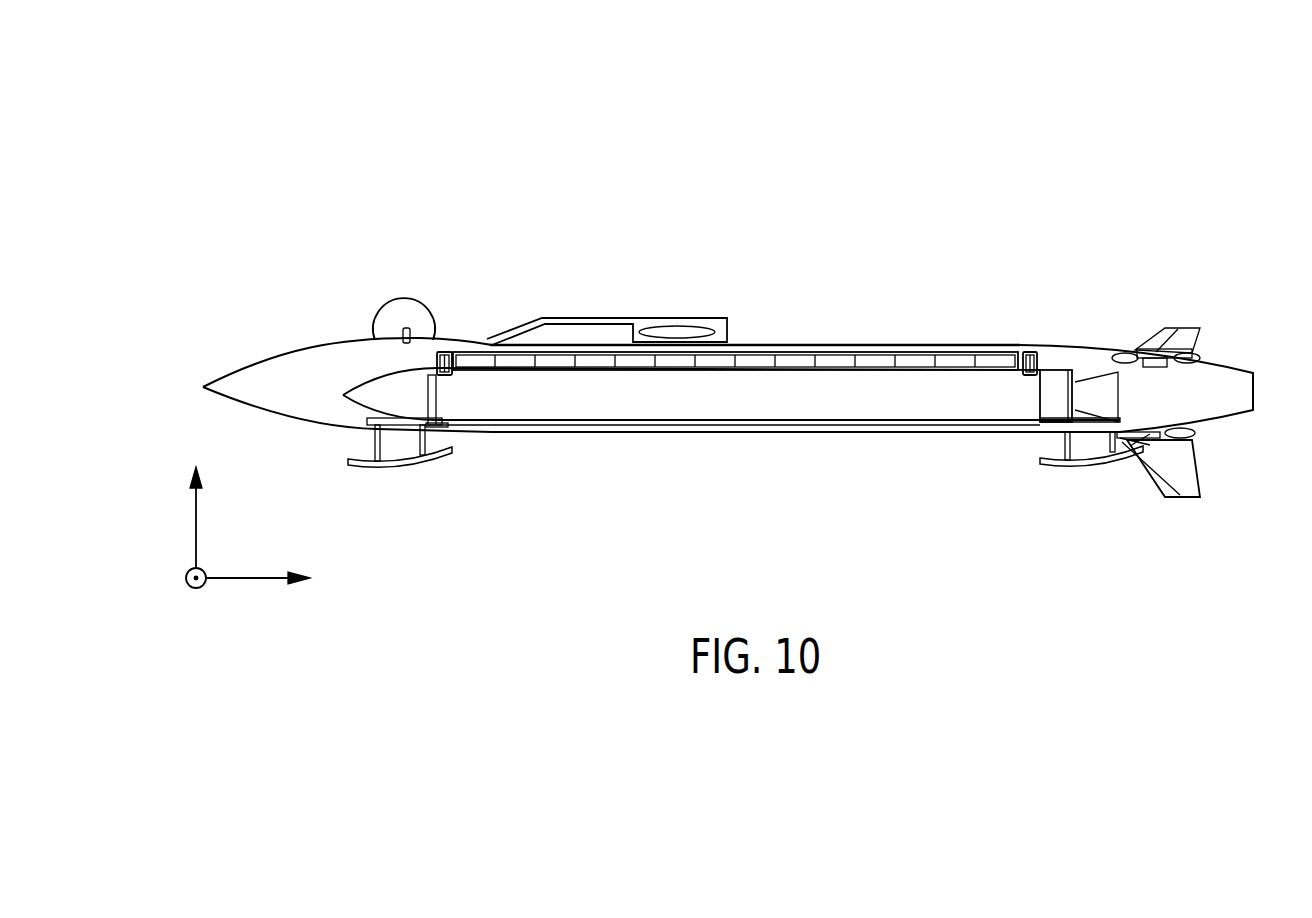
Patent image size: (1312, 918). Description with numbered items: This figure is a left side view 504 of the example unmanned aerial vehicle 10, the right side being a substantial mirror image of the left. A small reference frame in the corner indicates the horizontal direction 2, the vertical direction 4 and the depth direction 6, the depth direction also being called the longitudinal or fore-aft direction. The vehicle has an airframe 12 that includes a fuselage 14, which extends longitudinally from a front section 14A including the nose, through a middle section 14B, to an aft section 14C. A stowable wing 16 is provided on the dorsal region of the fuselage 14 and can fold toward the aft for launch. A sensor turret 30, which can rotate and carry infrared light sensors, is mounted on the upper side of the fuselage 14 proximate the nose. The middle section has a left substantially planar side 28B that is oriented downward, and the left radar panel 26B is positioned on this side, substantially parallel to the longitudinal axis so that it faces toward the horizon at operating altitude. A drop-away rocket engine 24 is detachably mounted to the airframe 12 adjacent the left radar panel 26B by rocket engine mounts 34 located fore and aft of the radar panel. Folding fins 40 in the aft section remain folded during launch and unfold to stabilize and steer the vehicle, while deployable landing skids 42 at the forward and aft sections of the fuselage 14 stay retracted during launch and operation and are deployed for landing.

The left side view 504 is at (178, 130).
The unmanned aerial vehicle 10 is at (317, 217).
The airframe 12 is at (537, 292).
The fuselage 14 is at (930, 292).
The nose section of fuselage 14A is at (316, 340).
The middle section of fuselage 14B is at (850, 345).
The tail section of fuselage 14C is at (1232, 370).
The stowable wing 16 is at (670, 325).
The drop-away rocket engine 24 is at (908, 408).
The left radar panel 26B is at (595, 362).
The left substantially planar side 28B is at (438, 352).
The sensor turret 30 is at (398, 298).
The rocket engine mount 34 is at (1030, 352).
The folding fins 40 is at (1200, 468).
The deployable landing skids 42 is at (402, 467).
The horizontal direction 2 is at (186, 580).
The vertical direction 4 is at (196, 528).
The depth direction 6 is at (248, 578).